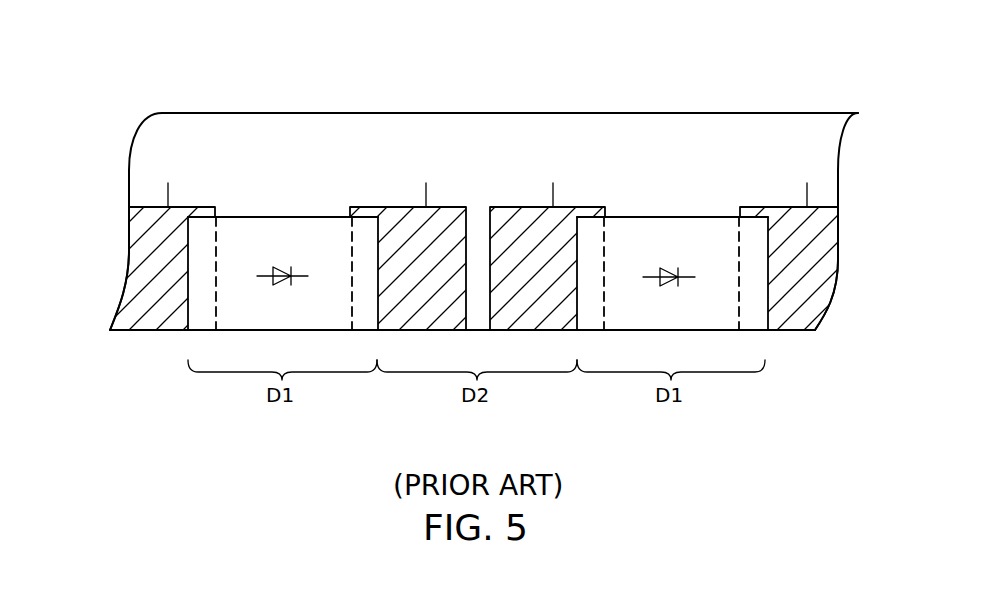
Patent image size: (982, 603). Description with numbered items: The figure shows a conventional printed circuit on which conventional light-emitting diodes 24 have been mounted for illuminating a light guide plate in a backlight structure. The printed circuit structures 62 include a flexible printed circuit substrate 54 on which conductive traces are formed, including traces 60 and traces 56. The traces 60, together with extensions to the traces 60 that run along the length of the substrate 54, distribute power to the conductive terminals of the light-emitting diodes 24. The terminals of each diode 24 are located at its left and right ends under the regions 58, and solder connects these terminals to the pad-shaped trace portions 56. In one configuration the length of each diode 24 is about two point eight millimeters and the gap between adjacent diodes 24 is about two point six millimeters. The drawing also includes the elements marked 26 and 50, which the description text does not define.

The light-emitting diode 24 is at (290, 331).
The photodiode 26 is at (281, 180).
The isolation structure 50 is at (788, 212).
The flexible printed circuit substrate 54 is at (528, 125).
The traces 56 is at (404, 212).
The regions 58 is at (208, 250).
The traces 60 is at (168, 190).
The printed circuit structures 62 is at (98, 108).